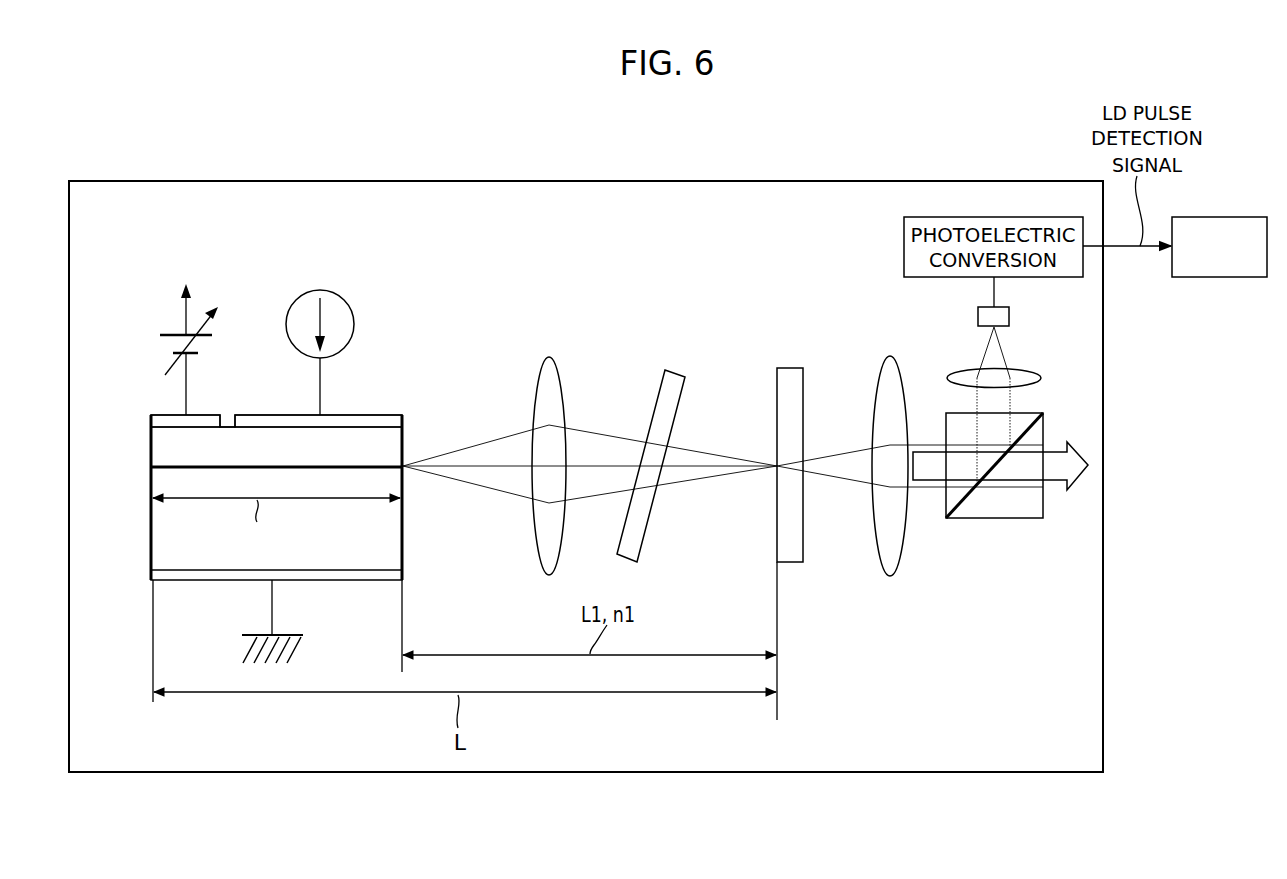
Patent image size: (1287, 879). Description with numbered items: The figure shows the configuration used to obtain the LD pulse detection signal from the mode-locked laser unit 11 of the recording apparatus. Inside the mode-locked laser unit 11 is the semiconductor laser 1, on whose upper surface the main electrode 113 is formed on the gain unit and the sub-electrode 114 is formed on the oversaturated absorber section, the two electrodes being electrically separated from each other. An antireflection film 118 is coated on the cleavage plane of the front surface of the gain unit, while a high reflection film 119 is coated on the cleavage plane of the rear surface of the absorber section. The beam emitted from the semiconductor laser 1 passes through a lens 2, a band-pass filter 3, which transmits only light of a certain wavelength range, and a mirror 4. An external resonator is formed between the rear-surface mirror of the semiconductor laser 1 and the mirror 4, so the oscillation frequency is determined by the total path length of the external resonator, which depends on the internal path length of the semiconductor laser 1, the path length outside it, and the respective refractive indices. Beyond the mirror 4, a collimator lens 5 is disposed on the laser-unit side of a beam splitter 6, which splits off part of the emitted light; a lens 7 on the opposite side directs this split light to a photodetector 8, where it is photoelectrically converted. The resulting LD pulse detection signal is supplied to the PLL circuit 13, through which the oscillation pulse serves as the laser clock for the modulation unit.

The semiconductor laser 1 is at (341, 586).
The lens 2 is at (549, 357).
The band-pass filter 3 is at (675, 373).
The mirror 4 is at (793, 368).
The collimator lens 5 is at (892, 356).
The beam splitter 6 is at (1043, 425).
The lens 7 is at (1037, 372).
The photodetector 8 is at (1010, 313).
The mode-locked laser unit 11 is at (638, 181).
The PLL circuit 13 is at (1238, 217).
The main electrode 113 is at (285, 417).
The sub-electrode 114 is at (162, 415).
The antireflection film 118 is at (403, 517).
The high reflection film 119 is at (151, 515).